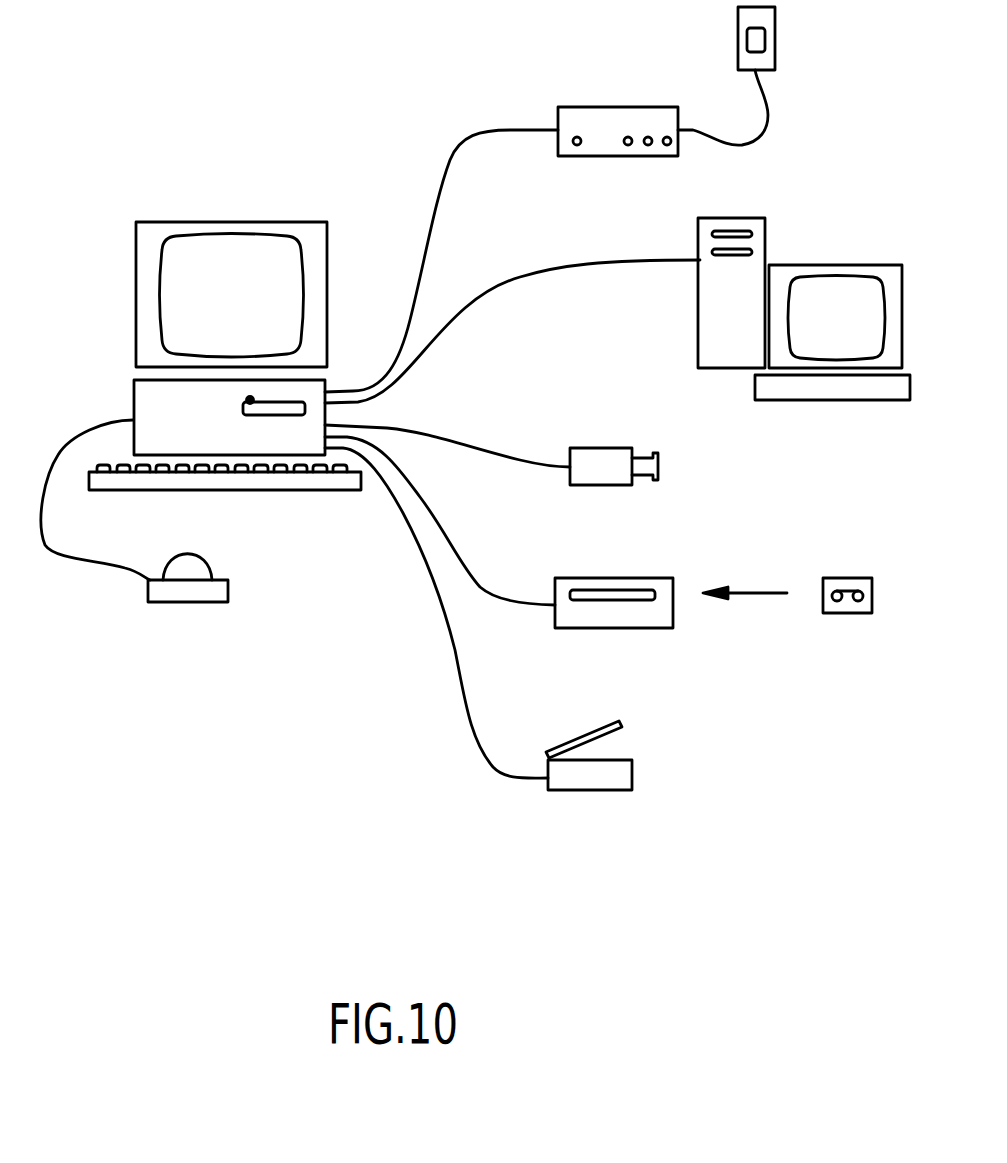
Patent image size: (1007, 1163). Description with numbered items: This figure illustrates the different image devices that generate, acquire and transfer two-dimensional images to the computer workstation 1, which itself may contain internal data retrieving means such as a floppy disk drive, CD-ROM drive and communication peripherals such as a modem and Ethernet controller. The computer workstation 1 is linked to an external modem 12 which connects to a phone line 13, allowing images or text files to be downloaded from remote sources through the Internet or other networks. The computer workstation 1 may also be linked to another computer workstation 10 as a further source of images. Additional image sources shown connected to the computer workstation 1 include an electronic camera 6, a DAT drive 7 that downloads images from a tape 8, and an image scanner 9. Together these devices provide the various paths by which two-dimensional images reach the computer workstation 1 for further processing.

The computer workstation 1 is at (127, 395).
The electronic camera 6 is at (603, 477).
The DAT drive 7 is at (648, 620).
The tape 8 is at (847, 607).
The image scanner 9 is at (593, 782).
The computer workstation 10 is at (843, 413).
The external modem 12 is at (585, 113).
The phone line 13 is at (780, 122).